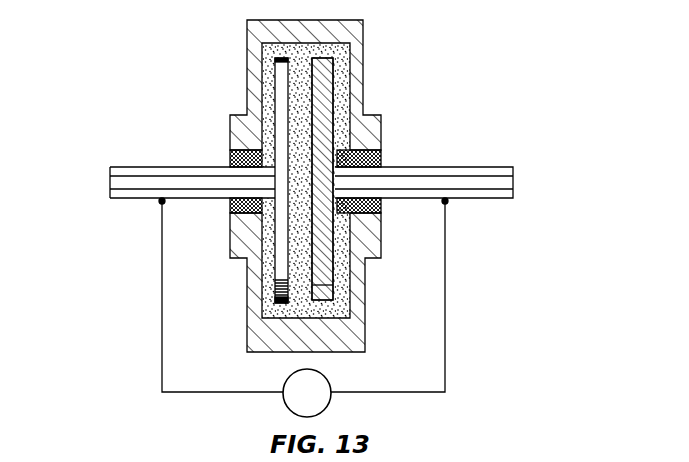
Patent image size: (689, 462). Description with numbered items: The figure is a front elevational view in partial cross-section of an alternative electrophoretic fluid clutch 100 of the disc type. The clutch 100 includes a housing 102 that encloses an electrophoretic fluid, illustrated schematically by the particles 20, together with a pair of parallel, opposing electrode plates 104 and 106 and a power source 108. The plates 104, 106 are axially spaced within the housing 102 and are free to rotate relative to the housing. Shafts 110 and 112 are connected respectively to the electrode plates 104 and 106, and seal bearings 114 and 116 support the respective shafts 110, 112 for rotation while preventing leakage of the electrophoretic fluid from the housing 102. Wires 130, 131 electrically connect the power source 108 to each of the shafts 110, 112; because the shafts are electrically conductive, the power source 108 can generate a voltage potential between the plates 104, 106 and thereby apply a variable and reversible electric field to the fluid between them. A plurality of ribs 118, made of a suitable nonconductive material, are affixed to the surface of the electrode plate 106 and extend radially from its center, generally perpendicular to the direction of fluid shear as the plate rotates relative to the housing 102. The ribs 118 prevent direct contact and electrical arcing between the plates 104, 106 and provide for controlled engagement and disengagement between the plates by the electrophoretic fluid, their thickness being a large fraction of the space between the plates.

The electrophoretic fluid clutch 100 is at (178, 75).
The housing 102 is at (364, 49).
The particles 20 is at (352, 81).
The electrode plate 104 is at (282, 237).
The electrode plate 106 is at (322, 235).
The power source 108 is at (324, 410).
The shaft 110 is at (112, 184).
The shaft 112 is at (513, 183).
The seal bearing 114 is at (230, 160).
The seal bearing 116 is at (383, 158).
The ribs 118 is at (308, 279).
The wire 130 is at (162, 327).
The wire 131 is at (445, 345).